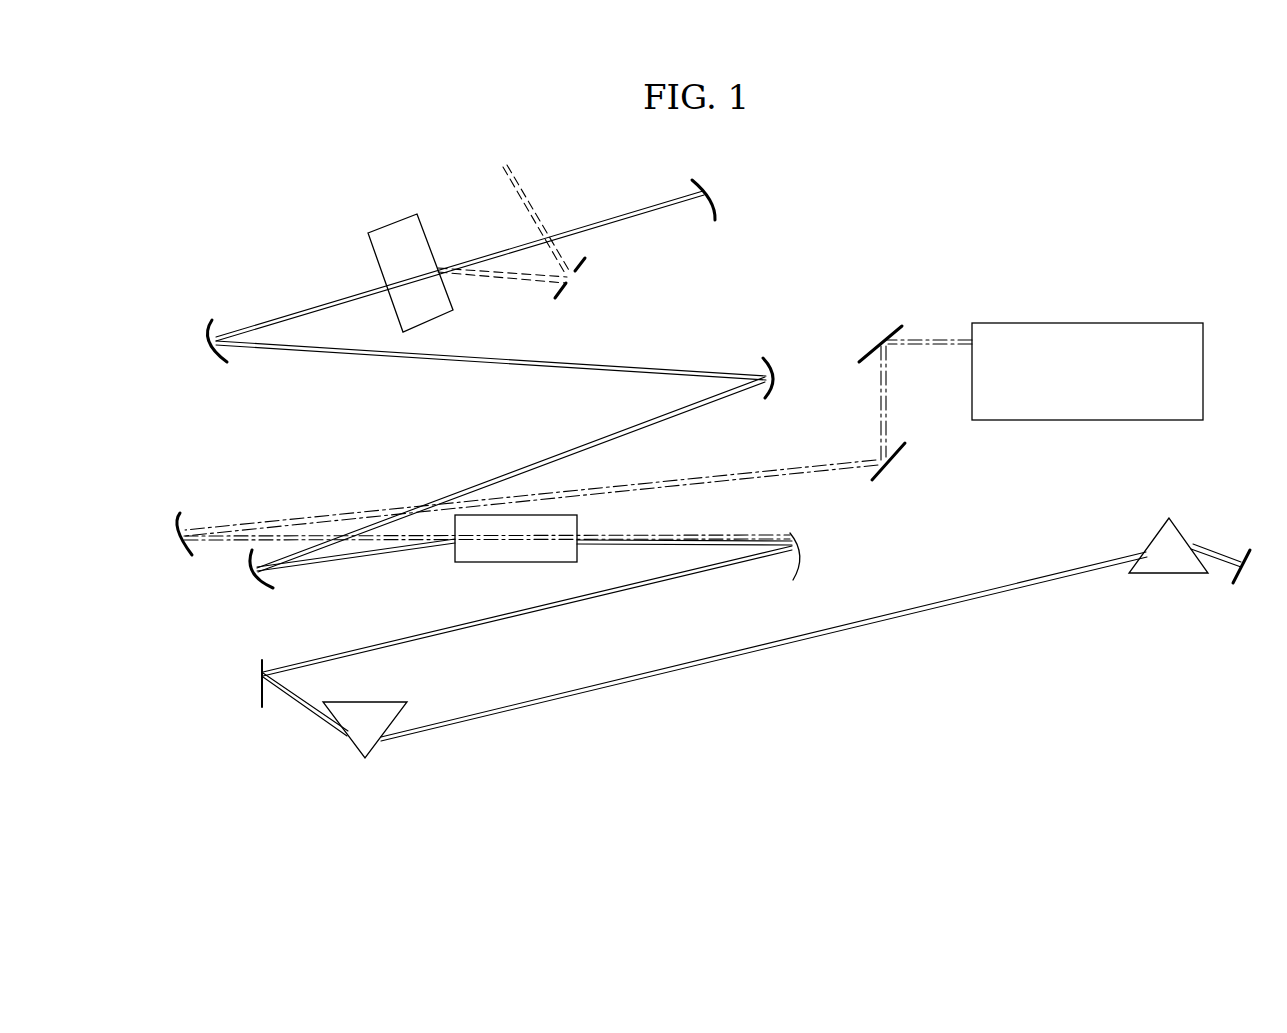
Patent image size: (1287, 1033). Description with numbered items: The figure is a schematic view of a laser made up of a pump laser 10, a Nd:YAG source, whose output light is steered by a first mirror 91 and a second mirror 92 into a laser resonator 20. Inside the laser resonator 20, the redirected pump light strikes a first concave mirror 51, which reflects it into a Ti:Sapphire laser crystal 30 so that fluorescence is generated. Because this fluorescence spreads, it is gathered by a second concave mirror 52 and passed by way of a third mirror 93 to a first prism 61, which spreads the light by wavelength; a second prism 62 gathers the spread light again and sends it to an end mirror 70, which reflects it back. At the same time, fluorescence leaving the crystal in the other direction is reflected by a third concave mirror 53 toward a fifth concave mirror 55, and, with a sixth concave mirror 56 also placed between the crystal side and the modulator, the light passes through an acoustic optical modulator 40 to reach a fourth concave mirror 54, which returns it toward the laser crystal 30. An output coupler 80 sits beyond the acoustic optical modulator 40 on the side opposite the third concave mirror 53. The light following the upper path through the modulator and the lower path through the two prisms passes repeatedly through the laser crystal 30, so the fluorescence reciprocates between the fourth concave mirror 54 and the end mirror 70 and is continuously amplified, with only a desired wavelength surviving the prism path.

The laser resonator 20 is at (958, 160).
The pump laser 10 is at (1144, 322).
The first mirror 91 is at (894, 326).
The second mirror 92 is at (900, 452).
The first concave mirror 51 is at (178, 522).
The laser crystal 30 is at (467, 562).
The third concave mirror 53 is at (264, 590).
The second concave mirror 52 is at (797, 562).
The fifth concave mirror 55 is at (768, 360).
The sixth concave mirror 56 is at (210, 338).
The fourth concave mirror 54 is at (718, 200).
The acoustic optical modulator 40 is at (410, 212).
The output coupler 80 is at (589, 264).
The third mirror 93 is at (259, 695).
The first prism 61 is at (360, 757).
The second prism 62 is at (1153, 574).
The end mirror 70 is at (1238, 585).